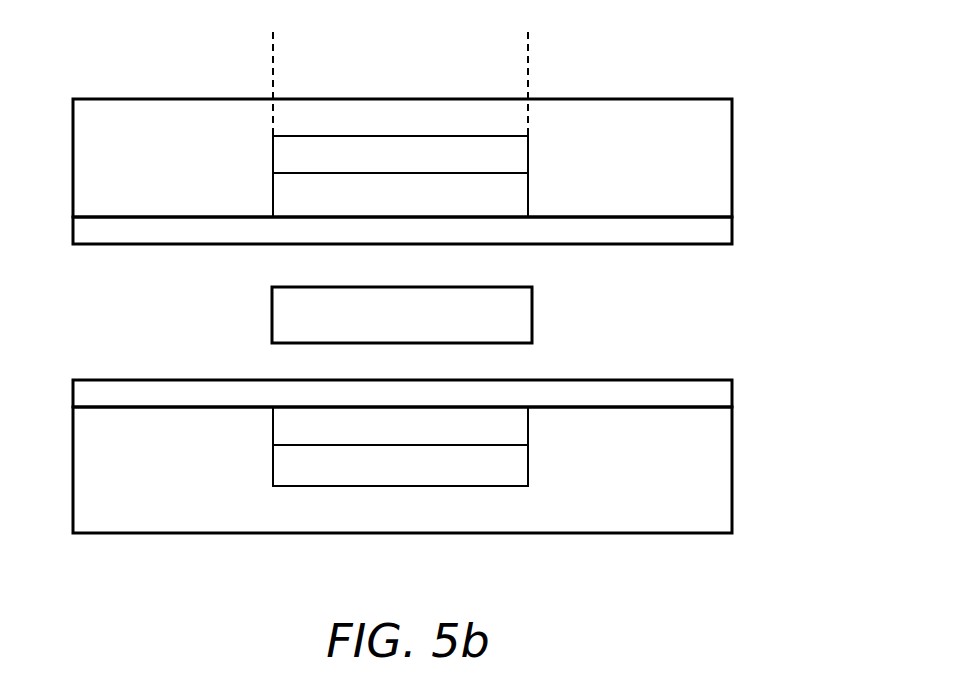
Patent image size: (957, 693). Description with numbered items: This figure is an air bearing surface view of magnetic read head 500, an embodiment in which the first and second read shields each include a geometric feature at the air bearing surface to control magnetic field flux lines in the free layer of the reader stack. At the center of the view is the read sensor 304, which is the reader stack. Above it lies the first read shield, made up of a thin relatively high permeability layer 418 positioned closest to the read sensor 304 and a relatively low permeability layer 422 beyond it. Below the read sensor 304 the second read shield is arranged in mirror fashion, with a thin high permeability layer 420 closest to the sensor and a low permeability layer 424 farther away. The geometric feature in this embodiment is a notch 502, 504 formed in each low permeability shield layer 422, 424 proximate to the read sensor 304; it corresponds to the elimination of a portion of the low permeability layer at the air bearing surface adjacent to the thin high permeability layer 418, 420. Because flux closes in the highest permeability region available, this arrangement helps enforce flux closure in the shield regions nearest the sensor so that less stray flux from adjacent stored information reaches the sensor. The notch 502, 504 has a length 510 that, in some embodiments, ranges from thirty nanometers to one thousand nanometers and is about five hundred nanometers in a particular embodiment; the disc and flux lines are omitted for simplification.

The head 500 is at (710, 84).
The notch 502 is at (425, 150).
The notch 504 is at (315, 463).
The length of notch 510 is at (283, 49).
The read sensor 304 is at (312, 325).
The thin high permeability layer 418 is at (307, 243).
The thin high permeability layer 420 is at (312, 404).
The low permeability layer 422 is at (163, 144).
The low permeability layer 424 is at (163, 509).